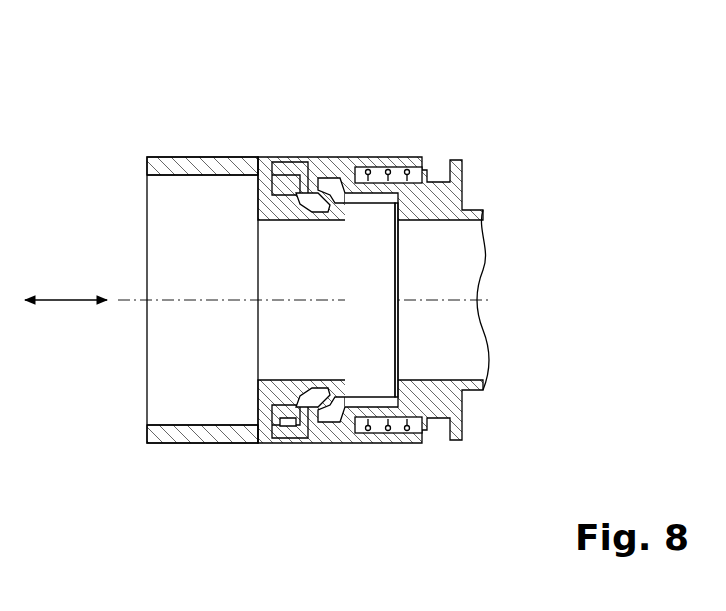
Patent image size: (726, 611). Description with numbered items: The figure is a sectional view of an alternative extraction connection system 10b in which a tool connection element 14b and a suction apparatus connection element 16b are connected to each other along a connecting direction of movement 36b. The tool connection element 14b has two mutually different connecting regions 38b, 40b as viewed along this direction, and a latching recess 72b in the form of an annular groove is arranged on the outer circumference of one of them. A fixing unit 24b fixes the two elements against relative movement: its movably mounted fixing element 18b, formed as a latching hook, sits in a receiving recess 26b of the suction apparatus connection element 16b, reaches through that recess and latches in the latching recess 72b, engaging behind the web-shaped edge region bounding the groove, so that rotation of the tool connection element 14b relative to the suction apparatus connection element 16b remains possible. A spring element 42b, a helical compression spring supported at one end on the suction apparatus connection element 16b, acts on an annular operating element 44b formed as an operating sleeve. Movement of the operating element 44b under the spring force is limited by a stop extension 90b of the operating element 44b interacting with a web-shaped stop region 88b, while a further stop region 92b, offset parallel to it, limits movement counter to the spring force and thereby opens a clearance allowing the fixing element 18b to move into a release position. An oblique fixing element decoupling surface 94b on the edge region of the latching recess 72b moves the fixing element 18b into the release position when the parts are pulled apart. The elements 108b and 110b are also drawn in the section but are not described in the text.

The extraction connection system 10b is at (515, 78).
The tool connection element 14b is at (212, 173).
The suction apparatus connection element 16b is at (450, 202).
The fixing element 18b is at (322, 185).
The fixing unit 24b is at (395, 80).
The receiving recess 26b is at (307, 207).
The connecting direction of movement 36b is at (65, 298).
The connecting region 38b is at (293, 352).
The connecting region 40b is at (196, 400).
The spring element 42b is at (394, 428).
The operating element 44b is at (350, 163).
The latching recess 72b is at (312, 412).
The stop region 88b is at (263, 430).
The stop extension 90b is at (283, 422).
The further stop region 92b is at (441, 452).
The fixing element decoupling surface 94b is at (315, 205).
The second pipe 108b is at (487, 300).
The pipe end 110b is at (496, 300).